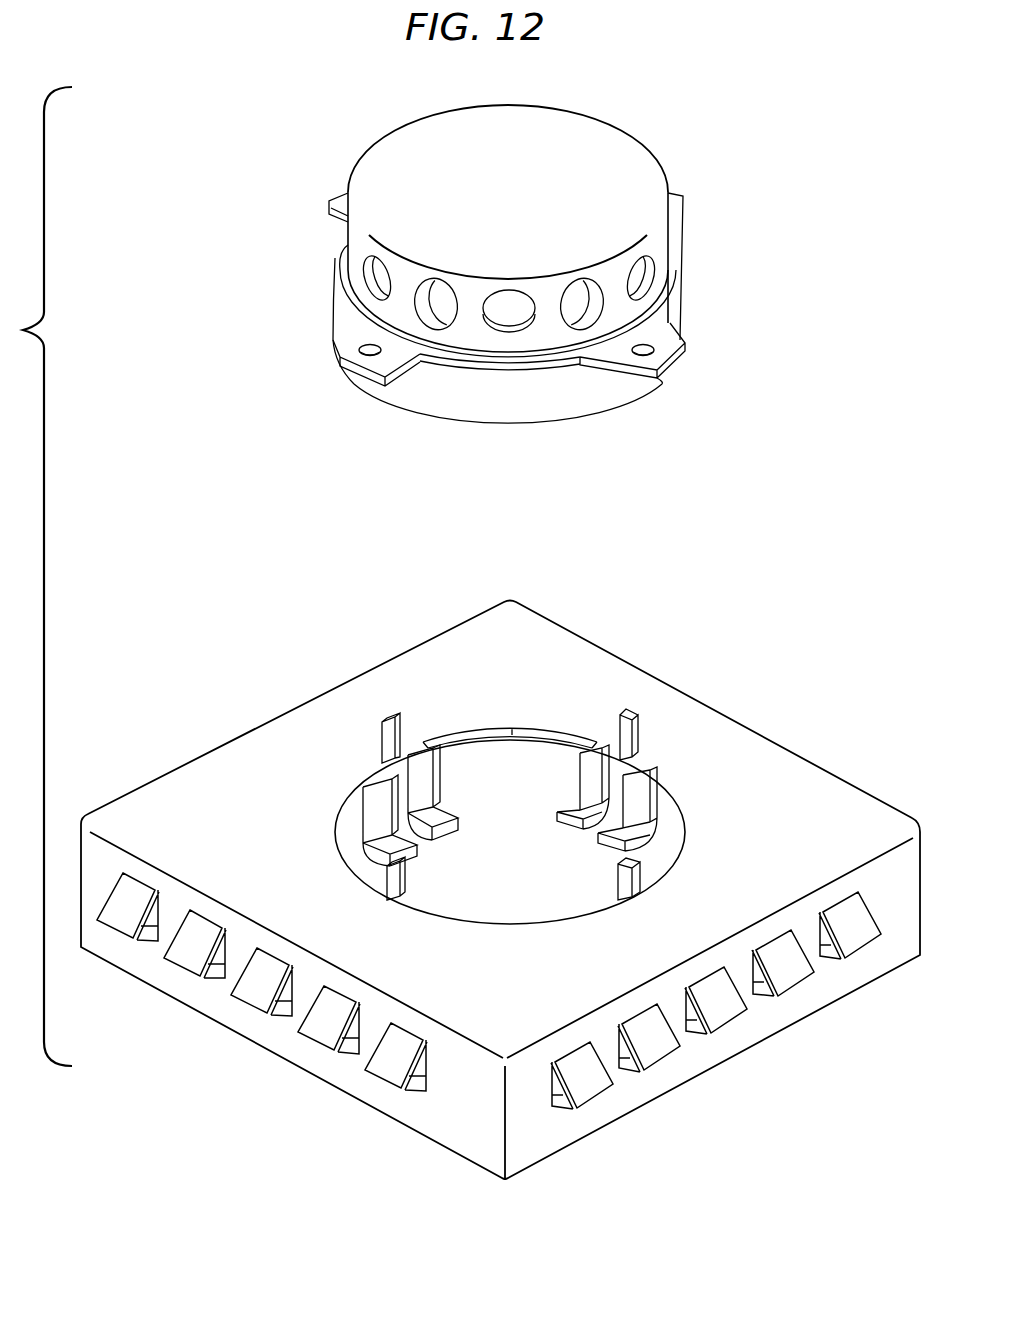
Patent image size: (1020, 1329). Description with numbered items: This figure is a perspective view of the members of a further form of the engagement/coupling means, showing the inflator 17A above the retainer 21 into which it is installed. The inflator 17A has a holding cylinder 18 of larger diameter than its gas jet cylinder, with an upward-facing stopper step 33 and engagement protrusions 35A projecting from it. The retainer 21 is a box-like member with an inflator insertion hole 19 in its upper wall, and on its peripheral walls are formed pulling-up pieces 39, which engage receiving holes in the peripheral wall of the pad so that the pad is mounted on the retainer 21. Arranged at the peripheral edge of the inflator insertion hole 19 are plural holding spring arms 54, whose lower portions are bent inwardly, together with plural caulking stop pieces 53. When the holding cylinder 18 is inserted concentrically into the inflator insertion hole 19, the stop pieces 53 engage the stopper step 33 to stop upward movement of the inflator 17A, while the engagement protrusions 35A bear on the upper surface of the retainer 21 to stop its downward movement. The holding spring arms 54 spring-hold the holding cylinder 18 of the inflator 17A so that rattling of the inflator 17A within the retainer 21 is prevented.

The inflator 17A is at (623, 131).
The stopper step 33 is at (670, 277).
The engagement protrusions 35A is at (680, 368).
The holding cylinder 18 is at (400, 404).
The inflator insertion hole 19 is at (540, 730).
The retainer 21 is at (614, 652).
The caulking stop pieces 53 is at (628, 712).
The holding spring arms 54 is at (677, 812).
The pulling-up pieces 39 is at (862, 958).